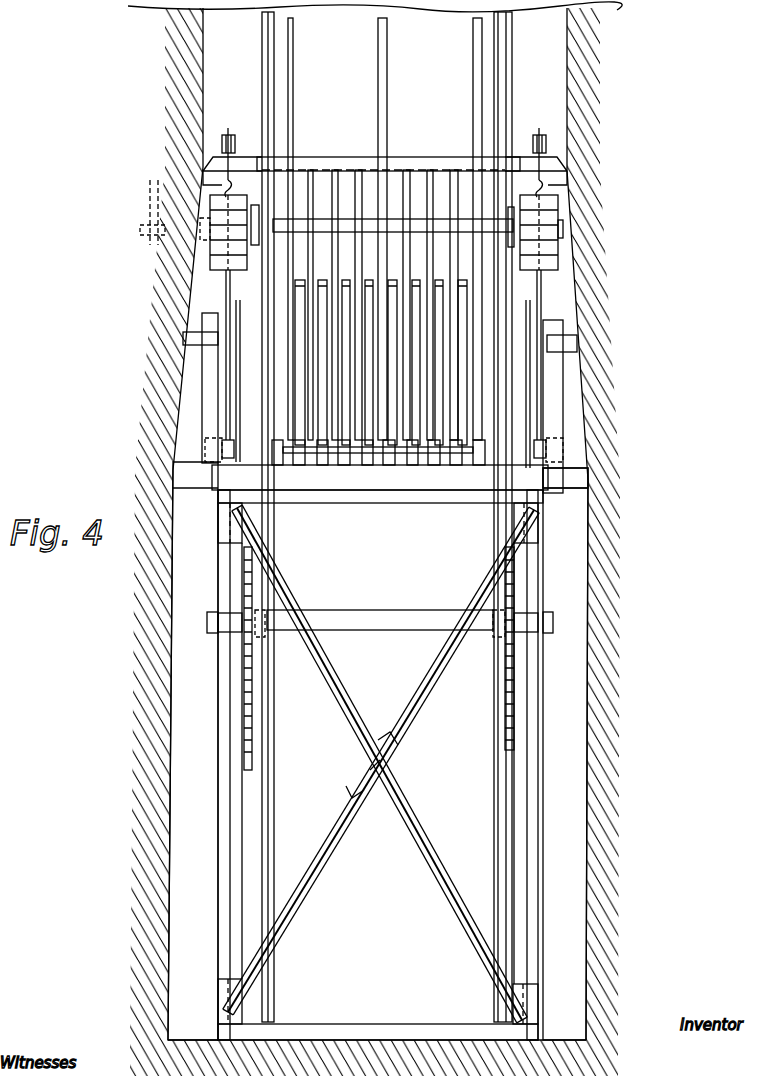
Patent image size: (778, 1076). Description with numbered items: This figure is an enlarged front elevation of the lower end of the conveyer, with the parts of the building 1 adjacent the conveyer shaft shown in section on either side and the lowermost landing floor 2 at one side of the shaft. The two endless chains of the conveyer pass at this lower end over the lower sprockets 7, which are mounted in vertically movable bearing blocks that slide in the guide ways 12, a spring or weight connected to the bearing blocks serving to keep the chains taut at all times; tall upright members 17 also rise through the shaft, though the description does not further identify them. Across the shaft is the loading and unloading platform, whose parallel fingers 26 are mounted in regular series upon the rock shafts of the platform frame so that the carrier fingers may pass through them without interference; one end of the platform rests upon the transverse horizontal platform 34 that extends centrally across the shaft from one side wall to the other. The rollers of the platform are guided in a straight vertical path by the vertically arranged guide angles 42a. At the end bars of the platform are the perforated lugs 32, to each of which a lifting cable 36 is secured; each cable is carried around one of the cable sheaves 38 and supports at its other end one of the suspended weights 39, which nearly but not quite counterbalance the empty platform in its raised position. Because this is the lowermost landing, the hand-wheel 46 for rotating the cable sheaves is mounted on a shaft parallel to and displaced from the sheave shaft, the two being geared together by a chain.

The parts of the building 1 is at (170, 802).
The lowermost landing floor 2 is at (583, 480).
The lower sprockets 7 is at (252, 718).
The guide ways 12 is at (223, 853).
The upright post 17 is at (270, 50).
The platform fingers 26 is at (367, 453).
The perforated lugs 32 is at (546, 455).
The transverse horizontal platform 34 is at (438, 480).
The lifting cable 36 is at (225, 388).
The cable sheaves 38 is at (222, 140).
The suspended weights 39 is at (222, 255).
The guide angles 42a is at (553, 417).
The hand-wheel 46 is at (148, 233).